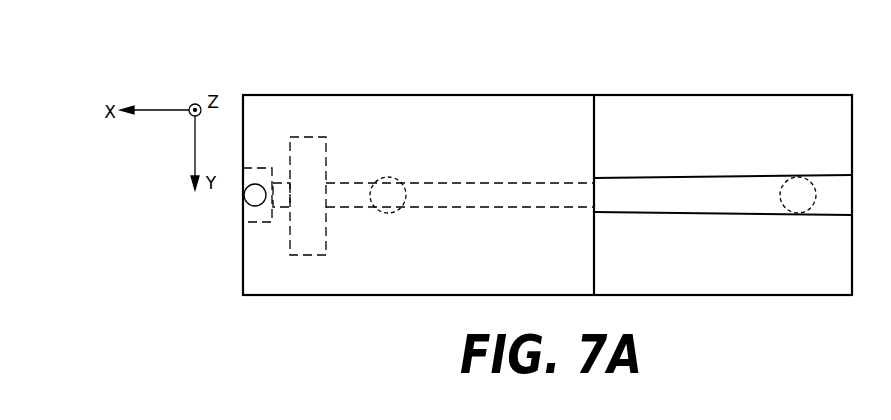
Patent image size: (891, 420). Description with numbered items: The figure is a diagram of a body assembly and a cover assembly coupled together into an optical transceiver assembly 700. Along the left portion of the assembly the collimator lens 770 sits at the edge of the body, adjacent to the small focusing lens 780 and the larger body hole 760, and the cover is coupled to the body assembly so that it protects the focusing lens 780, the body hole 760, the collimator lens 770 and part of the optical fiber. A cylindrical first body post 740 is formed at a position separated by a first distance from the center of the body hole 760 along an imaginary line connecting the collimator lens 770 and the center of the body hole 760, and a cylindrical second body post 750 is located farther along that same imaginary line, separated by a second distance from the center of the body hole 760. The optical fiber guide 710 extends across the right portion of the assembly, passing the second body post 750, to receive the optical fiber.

The optical system / housing 700 is at (522, 27).
The optical fiber guide 710 is at (656, 177).
The first body post 740 is at (388, 178).
The second body post 750 is at (797, 178).
The body hole 760 is at (308, 137).
The collimator lens 770 is at (246, 206).
The focusing lens 780 is at (287, 190).